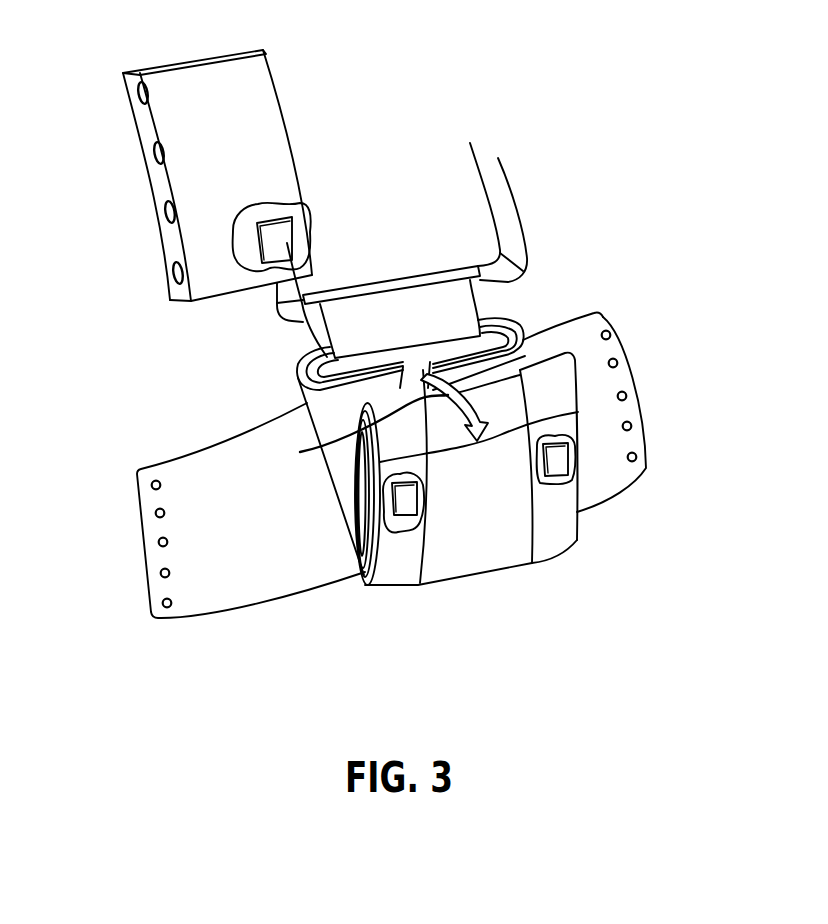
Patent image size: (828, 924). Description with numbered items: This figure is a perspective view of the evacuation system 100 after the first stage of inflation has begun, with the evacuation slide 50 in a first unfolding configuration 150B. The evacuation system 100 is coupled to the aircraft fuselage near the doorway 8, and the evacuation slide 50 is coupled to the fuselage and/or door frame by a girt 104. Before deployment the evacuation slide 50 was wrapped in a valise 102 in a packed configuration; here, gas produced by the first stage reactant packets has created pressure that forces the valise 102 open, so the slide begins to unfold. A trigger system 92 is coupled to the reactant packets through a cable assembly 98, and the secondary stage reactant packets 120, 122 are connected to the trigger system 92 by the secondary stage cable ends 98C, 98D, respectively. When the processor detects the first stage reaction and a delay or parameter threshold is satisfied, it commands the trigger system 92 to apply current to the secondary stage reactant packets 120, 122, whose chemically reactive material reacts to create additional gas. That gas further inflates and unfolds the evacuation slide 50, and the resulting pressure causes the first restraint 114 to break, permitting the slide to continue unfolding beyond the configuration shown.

The evacuation system 100 is at (160, 391).
The doorway 8 is at (478, 231).
The trigger system 92 is at (276, 242).
The cable assembly 98 is at (303, 330).
The girt 104 is at (460, 302).
The evacuation slide 50 is at (297, 370).
The first restraint 114 is at (359, 428).
The secondary stage cable end 98C is at (372, 567).
The secondary stage reactant packet 120 is at (410, 500).
The secondary stage reactant packet 122 is at (575, 474).
The secondary stage cable end 98D is at (560, 462).
The first unfolding configuration 150B is at (582, 362).
The valise 102 is at (632, 407).